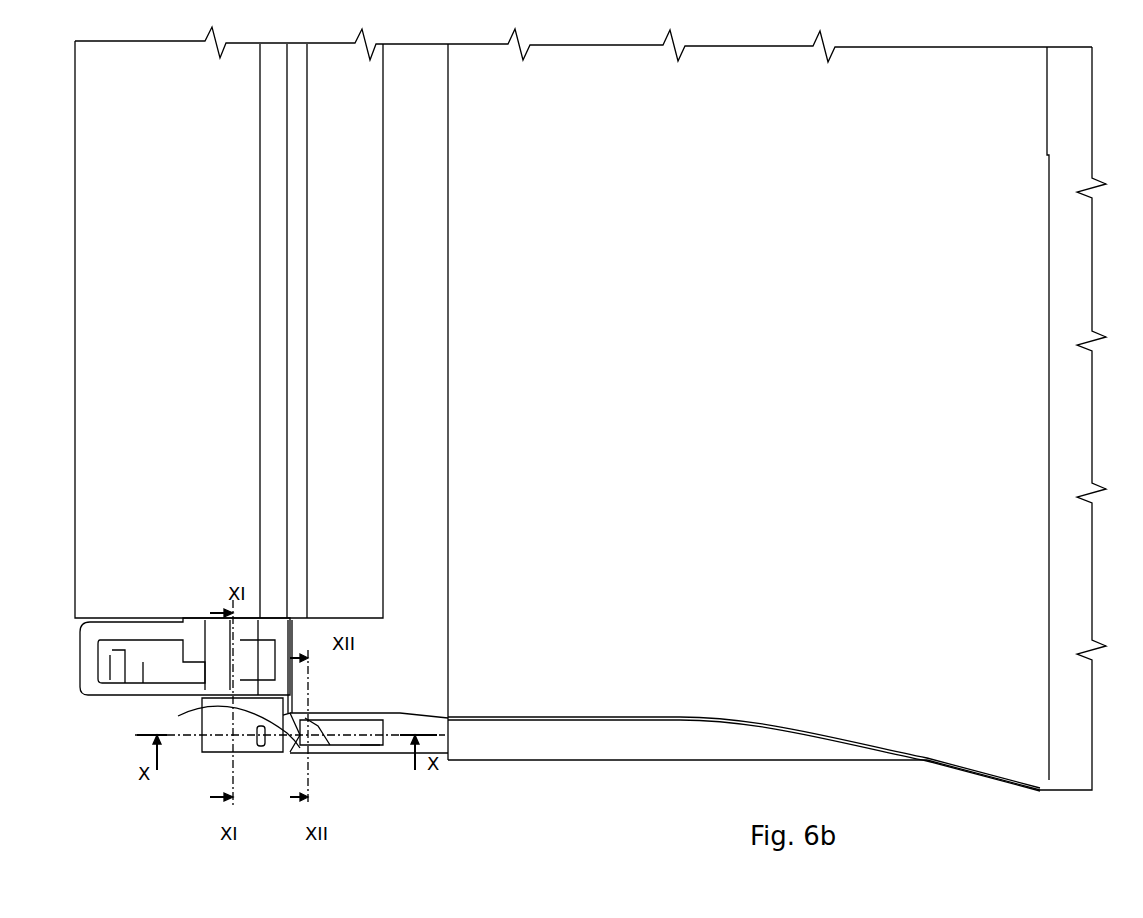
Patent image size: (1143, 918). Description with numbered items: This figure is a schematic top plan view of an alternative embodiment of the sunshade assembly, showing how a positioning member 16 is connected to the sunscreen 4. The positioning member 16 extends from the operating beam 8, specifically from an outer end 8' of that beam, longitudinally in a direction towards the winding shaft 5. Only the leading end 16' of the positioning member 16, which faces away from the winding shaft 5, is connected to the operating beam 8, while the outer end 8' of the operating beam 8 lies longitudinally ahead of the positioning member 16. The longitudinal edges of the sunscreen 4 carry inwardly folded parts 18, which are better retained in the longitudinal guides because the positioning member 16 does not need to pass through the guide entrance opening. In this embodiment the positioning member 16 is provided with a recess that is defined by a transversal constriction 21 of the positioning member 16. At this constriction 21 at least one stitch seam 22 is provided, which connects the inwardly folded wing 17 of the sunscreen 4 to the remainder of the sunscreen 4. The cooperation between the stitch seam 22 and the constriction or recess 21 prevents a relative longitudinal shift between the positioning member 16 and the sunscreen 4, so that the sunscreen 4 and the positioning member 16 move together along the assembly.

The operating beam 8 is at (210, 329).
The winding shaft 5 is at (1083, 393).
The inwardly folded parts 18 is at (700, 745).
The sunscreen 4 is at (960, 748).
The outer end 8' is at (229, 742).
The leading end 16' is at (226, 725).
The transversal constriction 21 is at (295, 748).
The positioning member 16 is at (369, 755).
The inwardly folded wing 17 is at (318, 726).
The stitch seam 22 is at (368, 742).